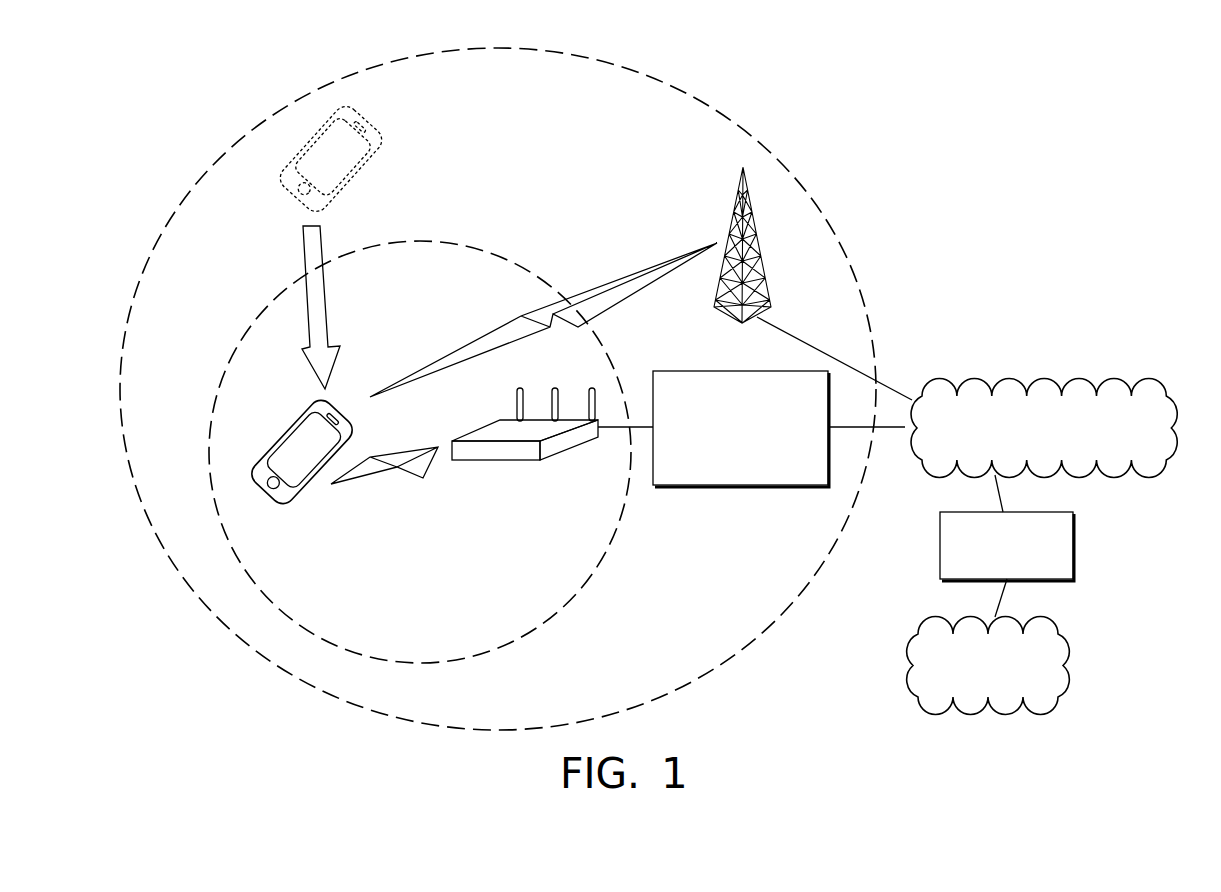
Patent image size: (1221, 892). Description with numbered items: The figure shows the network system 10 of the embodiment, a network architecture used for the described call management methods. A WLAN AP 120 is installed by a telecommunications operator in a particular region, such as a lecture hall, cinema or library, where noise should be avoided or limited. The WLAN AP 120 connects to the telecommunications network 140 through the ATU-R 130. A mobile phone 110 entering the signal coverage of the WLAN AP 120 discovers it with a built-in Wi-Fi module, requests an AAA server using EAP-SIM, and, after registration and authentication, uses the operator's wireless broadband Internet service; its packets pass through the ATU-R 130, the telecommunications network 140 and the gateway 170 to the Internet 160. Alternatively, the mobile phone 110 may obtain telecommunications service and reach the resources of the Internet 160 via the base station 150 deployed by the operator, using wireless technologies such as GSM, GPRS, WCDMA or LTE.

The network system 10 is at (965, 157).
The mobile phone 110 is at (302, 507).
The WLAN AP 120 is at (497, 461).
The ATU-R 130 is at (654, 371).
The telecommunications network 140 is at (1038, 378).
The base station 150 is at (760, 248).
The Internet 160 is at (1035, 618).
The gateway 170 is at (1023, 512).